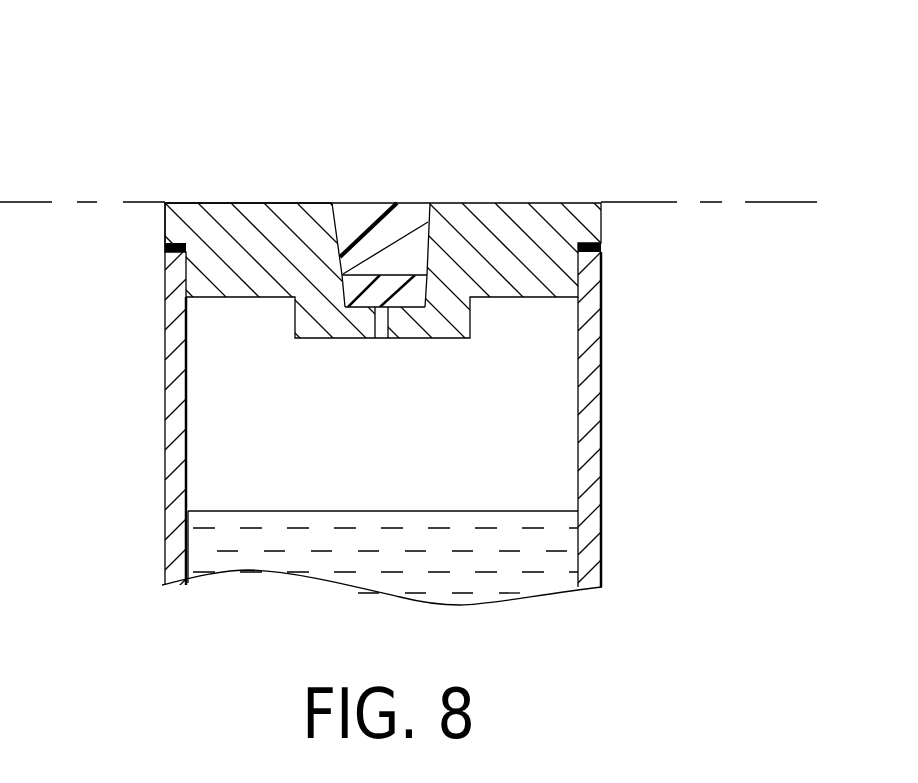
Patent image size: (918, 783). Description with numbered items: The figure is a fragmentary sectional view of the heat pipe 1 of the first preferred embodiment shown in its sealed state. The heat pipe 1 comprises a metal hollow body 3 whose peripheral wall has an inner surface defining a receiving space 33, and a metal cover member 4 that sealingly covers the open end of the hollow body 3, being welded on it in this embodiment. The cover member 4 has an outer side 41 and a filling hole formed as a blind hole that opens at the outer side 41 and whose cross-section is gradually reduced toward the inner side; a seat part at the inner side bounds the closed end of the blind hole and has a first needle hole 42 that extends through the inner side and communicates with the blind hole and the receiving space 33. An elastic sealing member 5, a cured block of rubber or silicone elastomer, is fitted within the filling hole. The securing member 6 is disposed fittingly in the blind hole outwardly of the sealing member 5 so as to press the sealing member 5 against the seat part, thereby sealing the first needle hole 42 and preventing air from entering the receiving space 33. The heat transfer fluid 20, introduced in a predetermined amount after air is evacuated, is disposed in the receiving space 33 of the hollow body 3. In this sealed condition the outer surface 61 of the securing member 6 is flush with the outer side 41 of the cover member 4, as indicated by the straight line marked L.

The heat pipe 1 is at (424, 308).
The metal hollow body 3 is at (393, 430).
The cover member 4 is at (416, 227).
The elastic sealing member 5 is at (417, 272).
The securing member 6 is at (360, 208).
The heat transfer fluid 20 is at (468, 508).
The receiving space 33 is at (220, 550).
The outer side 41 is at (243, 202).
The first needle hole 42 is at (388, 313).
The outer surface 61 is at (386, 203).